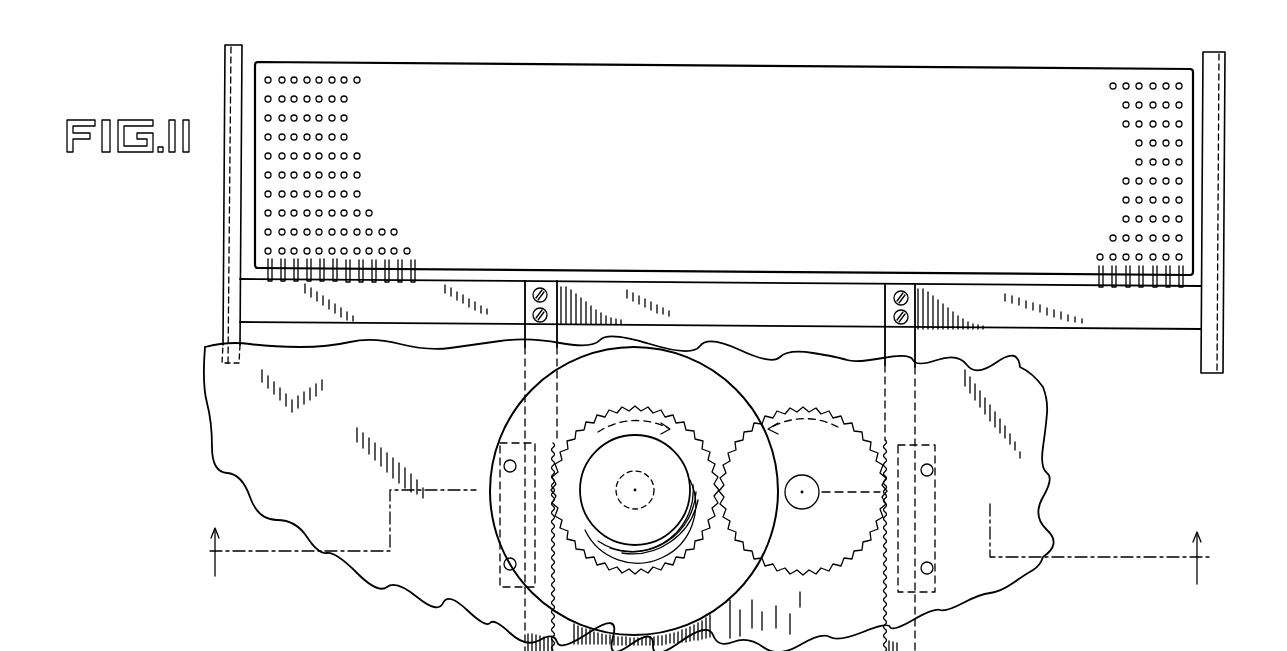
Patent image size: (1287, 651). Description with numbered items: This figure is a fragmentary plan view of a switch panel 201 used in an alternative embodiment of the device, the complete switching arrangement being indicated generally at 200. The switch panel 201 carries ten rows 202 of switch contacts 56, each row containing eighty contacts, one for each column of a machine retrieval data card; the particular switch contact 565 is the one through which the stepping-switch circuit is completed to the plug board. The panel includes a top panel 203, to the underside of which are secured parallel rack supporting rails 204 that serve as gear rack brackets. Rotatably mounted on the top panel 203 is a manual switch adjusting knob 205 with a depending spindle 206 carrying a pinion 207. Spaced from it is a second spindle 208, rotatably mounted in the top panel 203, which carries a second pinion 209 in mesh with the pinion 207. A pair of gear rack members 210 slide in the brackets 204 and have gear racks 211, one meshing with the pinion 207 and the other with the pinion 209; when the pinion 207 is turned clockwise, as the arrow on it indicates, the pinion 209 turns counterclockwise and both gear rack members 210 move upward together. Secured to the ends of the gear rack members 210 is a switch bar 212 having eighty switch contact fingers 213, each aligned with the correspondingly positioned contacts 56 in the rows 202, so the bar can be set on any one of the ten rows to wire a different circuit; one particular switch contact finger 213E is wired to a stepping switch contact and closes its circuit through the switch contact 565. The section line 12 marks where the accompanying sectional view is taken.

The display assembly 200 is at (843, 58).
The switch panel 201 is at (514, 163).
The switch contacts 56 is at (347, 118).
The rows of switch contacts 202 is at (1182, 86).
The switch contact 565 is at (317, 249).
The switch bar 212 is at (647, 291).
The switch contact fingers 213 is at (414, 262).
The switch contact finger 213E is at (322, 281).
The gear rack members 210 is at (528, 362).
The top panel 203 is at (1028, 433).
The rack supporting rails 204 is at (500, 526).
The manual switch adjusting knob 205 is at (600, 452).
The spindle 206 is at (636, 510).
The pinion 207 is at (664, 414).
The spindle 208 is at (803, 509).
The second pinion 209 is at (835, 415).
The gear racks 211 is at (521, 641).
The section line 12 is at (710, 537).